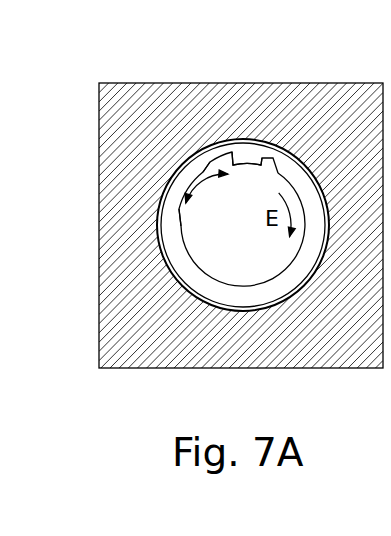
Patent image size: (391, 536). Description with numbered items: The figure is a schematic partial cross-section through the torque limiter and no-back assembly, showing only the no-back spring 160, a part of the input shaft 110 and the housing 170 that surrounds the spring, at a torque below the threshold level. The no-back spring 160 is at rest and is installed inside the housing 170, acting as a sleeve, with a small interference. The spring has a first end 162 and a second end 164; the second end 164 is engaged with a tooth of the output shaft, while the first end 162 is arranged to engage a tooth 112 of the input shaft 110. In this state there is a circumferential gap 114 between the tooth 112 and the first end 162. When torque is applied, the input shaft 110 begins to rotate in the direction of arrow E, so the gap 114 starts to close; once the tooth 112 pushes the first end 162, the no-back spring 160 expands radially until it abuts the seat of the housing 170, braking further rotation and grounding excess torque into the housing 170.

The housing 170 is at (112, 352).
The input shaft 110 is at (198, 285).
The no-back spring 160 is at (172, 188).
The tooth 112 is at (179, 209).
The first end 162 is at (247, 152).
The second end 164 is at (211, 166).
The gap 114 is at (203, 182).